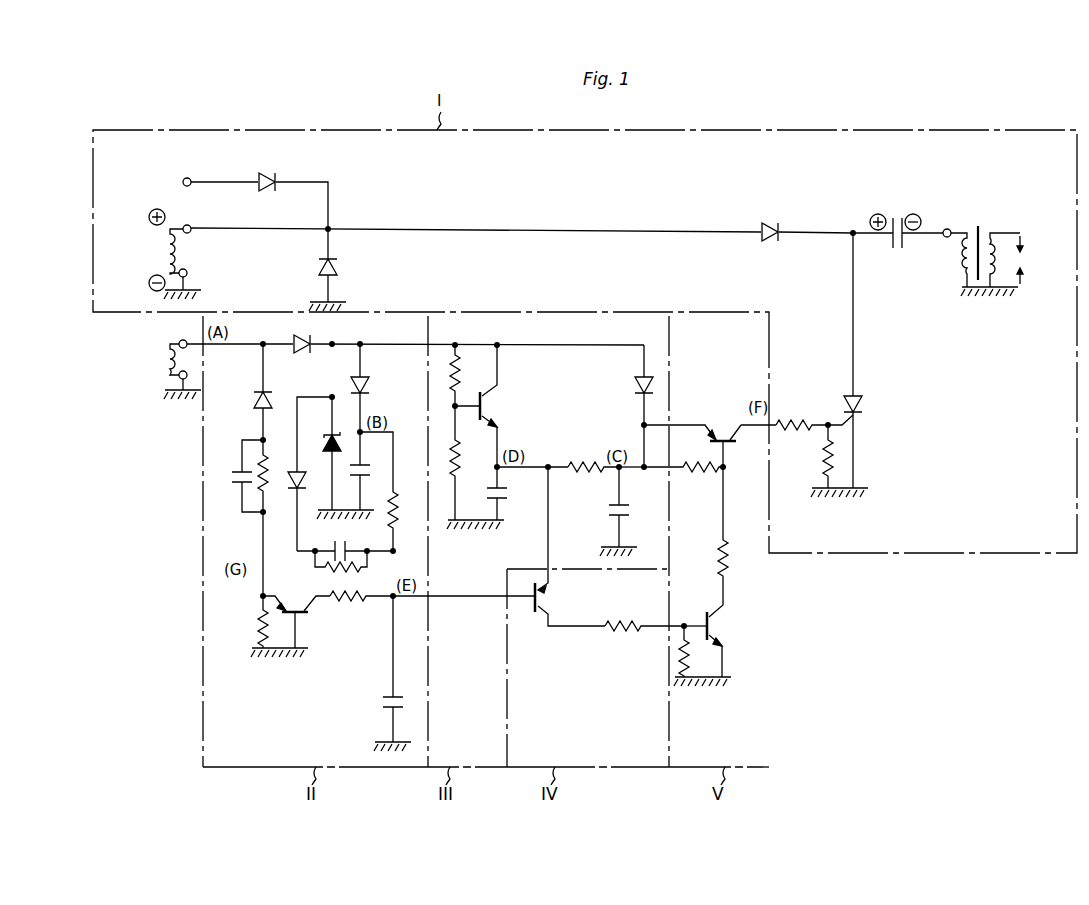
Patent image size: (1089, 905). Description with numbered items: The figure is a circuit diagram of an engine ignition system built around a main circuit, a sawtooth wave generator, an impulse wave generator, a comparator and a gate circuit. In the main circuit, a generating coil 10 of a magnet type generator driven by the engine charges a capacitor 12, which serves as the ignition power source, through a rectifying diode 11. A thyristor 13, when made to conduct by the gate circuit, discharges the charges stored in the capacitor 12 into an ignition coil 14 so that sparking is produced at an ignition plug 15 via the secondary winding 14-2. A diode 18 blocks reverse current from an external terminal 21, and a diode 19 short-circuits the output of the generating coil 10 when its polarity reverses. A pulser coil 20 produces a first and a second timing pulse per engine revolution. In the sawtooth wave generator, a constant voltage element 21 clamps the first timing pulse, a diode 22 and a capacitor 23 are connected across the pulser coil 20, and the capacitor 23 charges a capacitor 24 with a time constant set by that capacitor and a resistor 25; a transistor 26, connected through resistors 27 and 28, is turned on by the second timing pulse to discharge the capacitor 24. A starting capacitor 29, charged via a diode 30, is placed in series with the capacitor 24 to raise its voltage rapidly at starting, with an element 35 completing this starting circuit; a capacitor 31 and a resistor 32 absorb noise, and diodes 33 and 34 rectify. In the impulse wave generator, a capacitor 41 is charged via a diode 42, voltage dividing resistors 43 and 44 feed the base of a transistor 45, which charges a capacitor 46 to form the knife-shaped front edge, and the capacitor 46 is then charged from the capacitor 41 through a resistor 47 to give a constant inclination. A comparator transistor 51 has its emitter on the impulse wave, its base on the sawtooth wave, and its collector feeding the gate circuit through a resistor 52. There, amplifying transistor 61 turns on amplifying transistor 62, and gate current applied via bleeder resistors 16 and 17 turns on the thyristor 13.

The generating coil 10 is at (166, 252).
The rectifying diode 11 is at (770, 218).
The capacitor 12 is at (896, 215).
The thyristor 13 is at (860, 408).
The ignition coil 14 is at (989, 262).
The secondary winding 14-2 is at (994, 264).
The ignition plug 15 is at (1041, 260).
The bleeder resistor 16 is at (792, 416).
The bleeder resistor 17 is at (820, 458).
The diode 18 is at (270, 172).
The diode 19 is at (337, 267).
The pulser coil 20 is at (166, 360).
The constant voltage element 21 is at (187, 178).
The diode 22 is at (369, 386).
The capacitor 23 is at (368, 488).
The capacitor 24 is at (378, 704).
The resistor 25 is at (398, 515).
The transistor 26 is at (288, 599).
The resistor 27 is at (346, 603).
The resistor 28 is at (254, 622).
The capacitor 29 is at (335, 549).
The diode 30 is at (308, 481).
The capacitor 31 is at (232, 480).
The resistor 32 is at (270, 476).
The rectifying diode 33 is at (303, 354).
The rectifying diode 34 is at (250, 400).
The starting circuit element 35 is at (340, 574).
The capacitor 41 is at (610, 514).
The diode 42 is at (634, 386).
The voltage dividing resistor 43 is at (463, 388).
The voltage dividing resistor 44 is at (463, 476).
The transistor 45 is at (490, 408).
The capacitor 46 is at (506, 494).
The resistor 47 is at (586, 467).
The transistor 51 is at (547, 600).
The resistor 52 is at (624, 633).
The amplifying transistor 61 is at (718, 630).
The amplifying transistor 62 is at (728, 412).